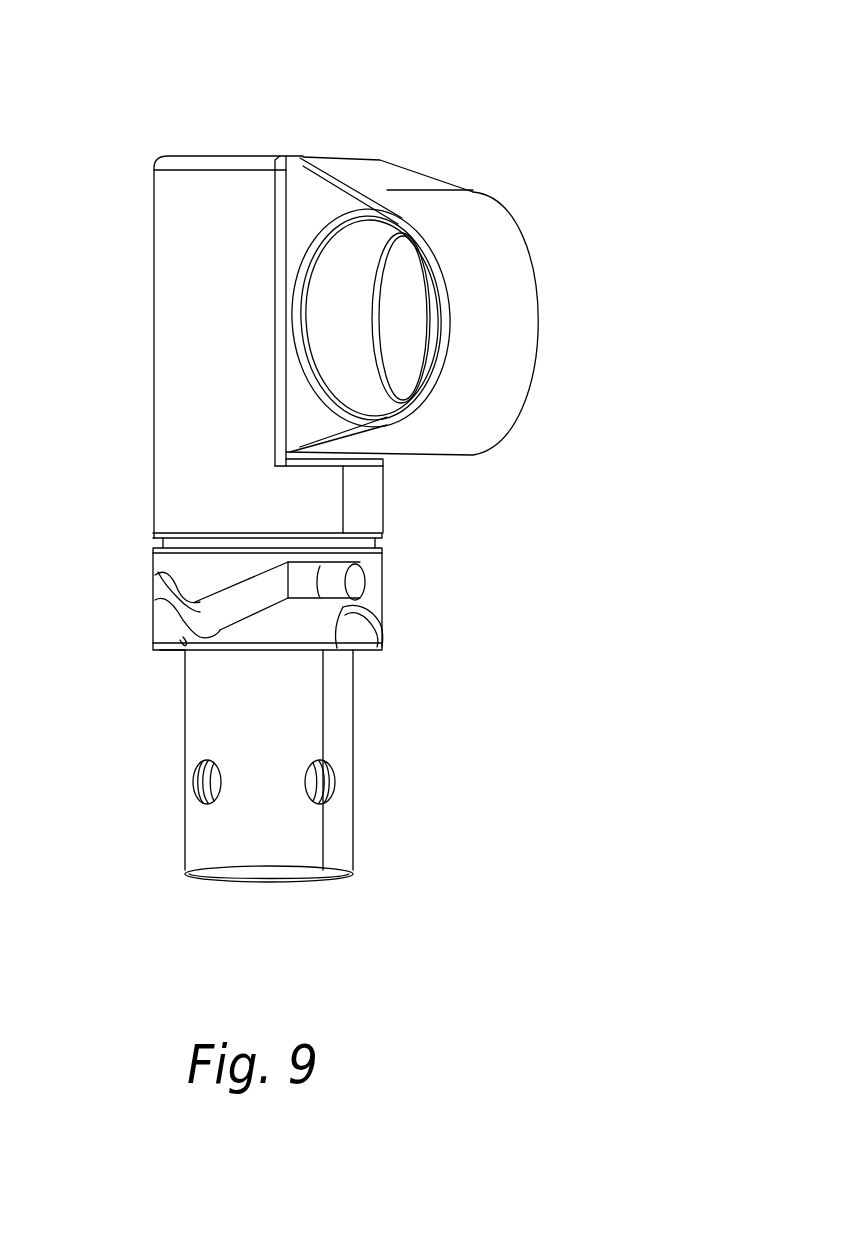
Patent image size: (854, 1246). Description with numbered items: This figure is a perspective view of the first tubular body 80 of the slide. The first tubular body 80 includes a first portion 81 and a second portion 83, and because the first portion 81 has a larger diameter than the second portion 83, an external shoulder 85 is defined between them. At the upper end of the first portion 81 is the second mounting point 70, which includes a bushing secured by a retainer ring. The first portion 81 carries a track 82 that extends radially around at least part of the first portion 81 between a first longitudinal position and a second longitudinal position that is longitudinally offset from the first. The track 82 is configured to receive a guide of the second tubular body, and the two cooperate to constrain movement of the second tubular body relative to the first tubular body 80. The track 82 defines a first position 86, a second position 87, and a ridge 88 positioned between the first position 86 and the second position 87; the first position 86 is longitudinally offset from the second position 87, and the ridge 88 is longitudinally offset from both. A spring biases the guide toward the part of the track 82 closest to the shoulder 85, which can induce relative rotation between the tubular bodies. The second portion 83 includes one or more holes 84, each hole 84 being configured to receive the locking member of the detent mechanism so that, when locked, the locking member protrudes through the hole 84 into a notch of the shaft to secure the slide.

The first tubular body 80 is at (412, 83).
The second mounting point 70 is at (512, 288).
The first portion 81 is at (200, 453).
The track 82 is at (163, 583).
The second portion 83 is at (343, 732).
The hole 84 is at (188, 777).
The external shoulder 85 is at (170, 660).
The first position 86 is at (198, 620).
The second position 87 is at (345, 583).
The ridge 88 is at (345, 620).